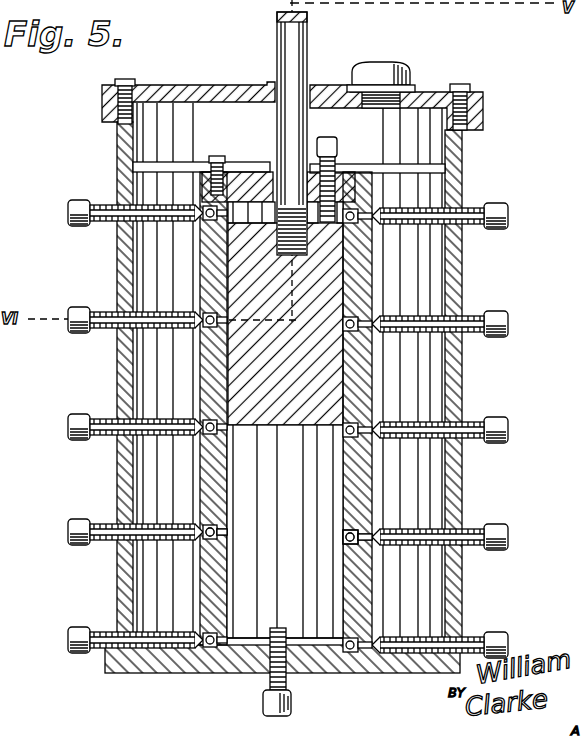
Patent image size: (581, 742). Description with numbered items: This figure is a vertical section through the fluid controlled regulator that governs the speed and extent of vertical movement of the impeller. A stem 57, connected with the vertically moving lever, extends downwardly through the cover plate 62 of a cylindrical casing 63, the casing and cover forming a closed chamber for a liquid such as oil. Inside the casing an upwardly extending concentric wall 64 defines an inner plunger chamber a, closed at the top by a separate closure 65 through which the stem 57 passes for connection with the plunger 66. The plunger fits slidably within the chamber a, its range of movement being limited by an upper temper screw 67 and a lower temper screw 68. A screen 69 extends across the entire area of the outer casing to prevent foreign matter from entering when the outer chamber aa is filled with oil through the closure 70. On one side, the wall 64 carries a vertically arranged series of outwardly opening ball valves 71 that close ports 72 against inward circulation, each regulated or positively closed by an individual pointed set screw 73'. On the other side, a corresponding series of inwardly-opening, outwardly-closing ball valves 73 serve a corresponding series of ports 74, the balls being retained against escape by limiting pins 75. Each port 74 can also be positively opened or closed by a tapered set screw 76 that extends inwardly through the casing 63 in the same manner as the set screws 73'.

The stem 57 is at (282, 34).
The cover plate 62 is at (184, 90).
The cylindrical casing 63 is at (124, 262).
The concentric wall 64 is at (213, 474).
The closure 65 is at (245, 187).
The plunger 66 is at (297, 345).
The upper temper screw 67 is at (340, 149).
The lower temper screw 68 is at (270, 682).
The screen 69 is at (167, 166).
The closure 70 is at (404, 70).
The outwardly opening ball valves 71 is at (214, 530).
The ports 72 is at (228, 534).
The inwardly-opening outwardly-closing ball valves 73 is at (325, 550).
The pointed set screws 73' is at (133, 586).
The ports 74 is at (368, 537).
The limiting pins 75 is at (347, 534).
The tapered set screw 76 is at (437, 535).
The plunger chamber a is at (285, 363).
The outer chamber aa is at (160, 366).